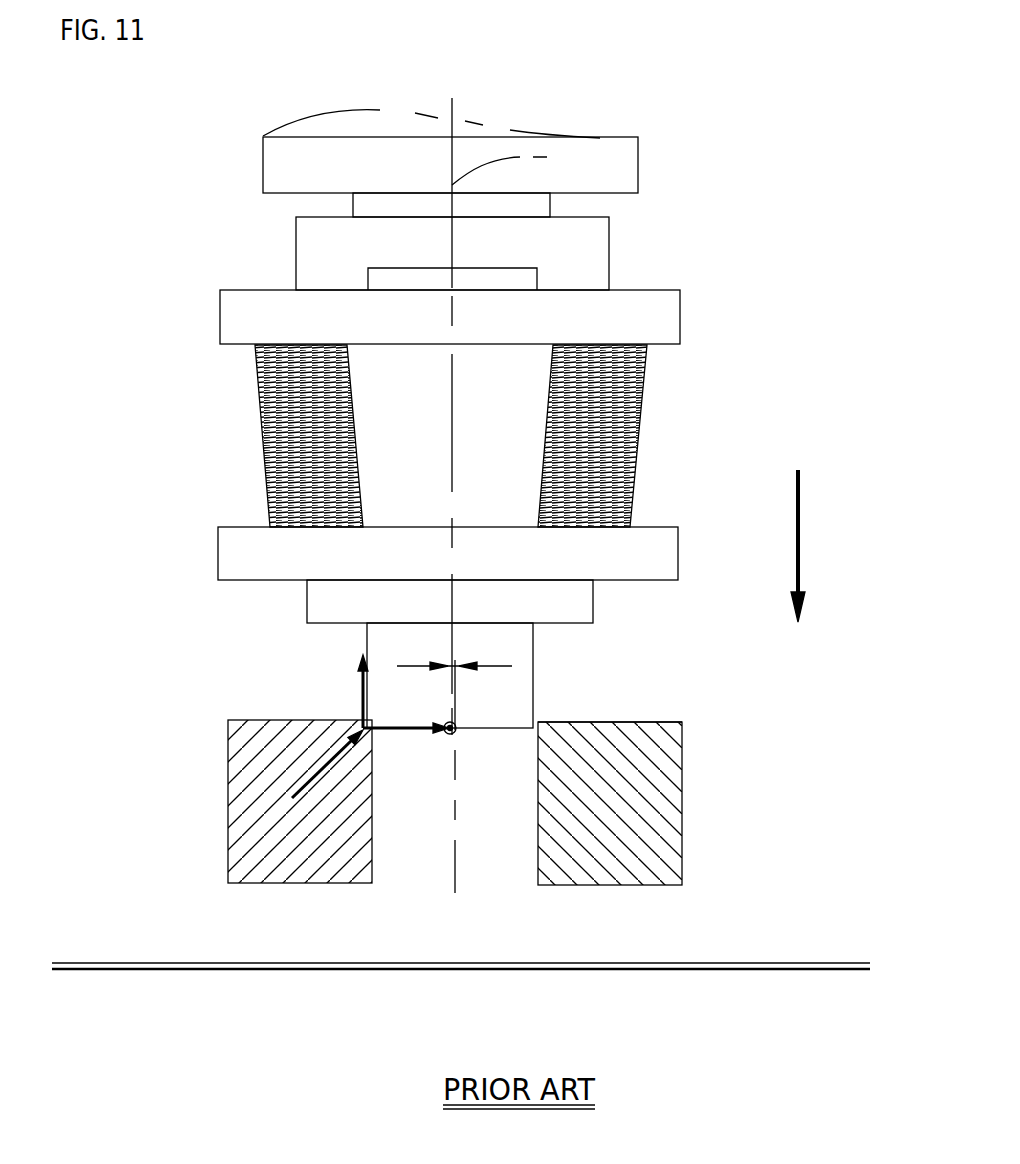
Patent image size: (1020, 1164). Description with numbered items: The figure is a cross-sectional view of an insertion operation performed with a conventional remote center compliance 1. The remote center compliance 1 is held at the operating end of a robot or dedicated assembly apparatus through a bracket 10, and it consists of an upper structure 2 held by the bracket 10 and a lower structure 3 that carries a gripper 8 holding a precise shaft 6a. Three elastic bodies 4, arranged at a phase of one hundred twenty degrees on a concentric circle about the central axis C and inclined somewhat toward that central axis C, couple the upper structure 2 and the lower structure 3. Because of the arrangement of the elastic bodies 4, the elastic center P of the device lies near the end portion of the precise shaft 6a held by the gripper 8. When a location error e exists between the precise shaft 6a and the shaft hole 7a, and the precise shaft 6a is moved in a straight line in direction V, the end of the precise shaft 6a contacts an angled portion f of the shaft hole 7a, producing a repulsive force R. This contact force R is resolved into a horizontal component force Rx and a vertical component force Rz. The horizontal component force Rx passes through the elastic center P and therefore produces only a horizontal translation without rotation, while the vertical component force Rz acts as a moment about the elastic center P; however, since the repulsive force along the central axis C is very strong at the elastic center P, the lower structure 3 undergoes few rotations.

The remote center compliance 1 is at (740, 350).
The upper structure 2 is at (200, 313).
The lower structure 3 is at (197, 547).
The elastic bodies 4 is at (660, 423).
The precise shaft 6a is at (387, 648).
The shaft hole 7a is at (537, 823).
The gripper 8 is at (287, 603).
The bracket 10 is at (275, 245).
The central axis C is at (563, 153).
The elastic center P is at (455, 723).
The angled portion f is at (540, 722).
The location error e is at (454, 652).
The direction V is at (802, 564).
The repulsive force R is at (320, 778).
The horizontal component force Rx is at (406, 753).
The vertical component force Rz is at (336, 691).